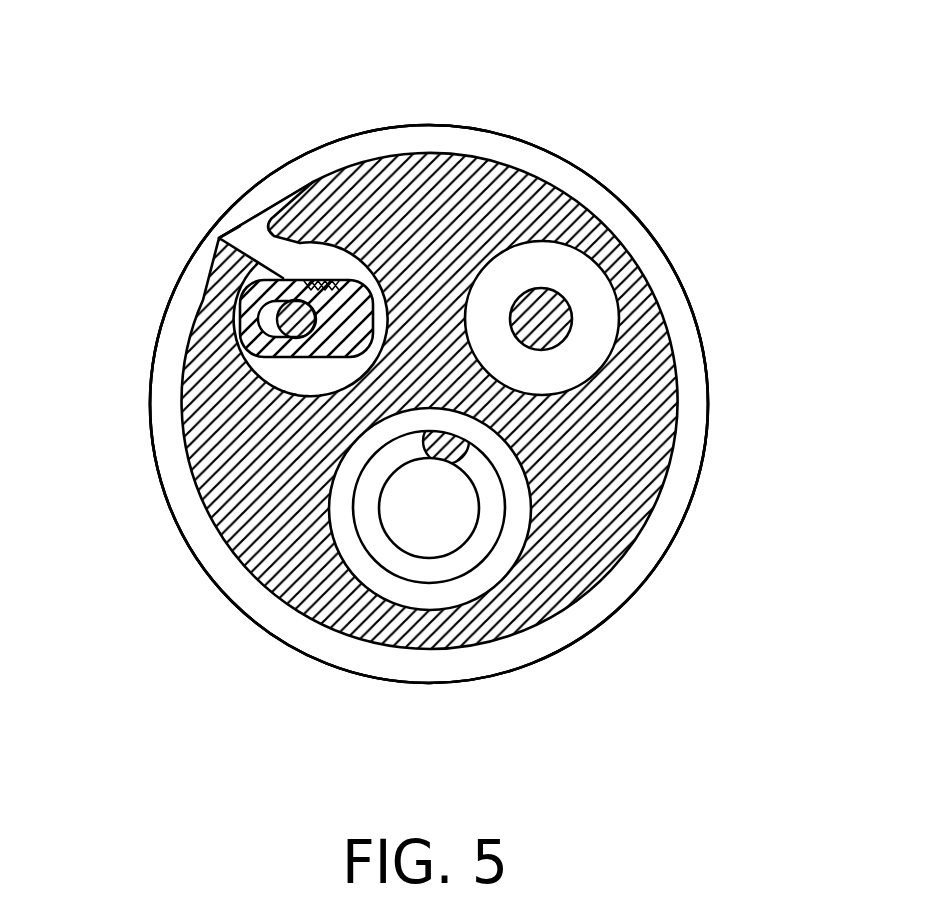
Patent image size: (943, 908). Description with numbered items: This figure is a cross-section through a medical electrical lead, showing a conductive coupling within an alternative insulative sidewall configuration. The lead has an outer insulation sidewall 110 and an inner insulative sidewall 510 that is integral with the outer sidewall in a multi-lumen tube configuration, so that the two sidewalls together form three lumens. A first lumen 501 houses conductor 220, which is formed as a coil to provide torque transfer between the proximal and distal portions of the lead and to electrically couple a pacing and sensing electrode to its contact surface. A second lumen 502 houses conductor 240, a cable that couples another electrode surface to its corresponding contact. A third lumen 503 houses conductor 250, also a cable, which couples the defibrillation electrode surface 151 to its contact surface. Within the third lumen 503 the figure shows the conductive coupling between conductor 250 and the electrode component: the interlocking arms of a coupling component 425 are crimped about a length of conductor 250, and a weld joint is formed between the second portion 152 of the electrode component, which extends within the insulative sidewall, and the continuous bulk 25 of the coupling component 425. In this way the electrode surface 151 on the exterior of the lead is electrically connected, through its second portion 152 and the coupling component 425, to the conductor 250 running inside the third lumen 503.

The continuous bulk 25 is at (426, 320).
The outer insulation sidewall 110 is at (643, 345).
The electrode surface 151 is at (350, 155).
The second portion of electrode component 152 is at (305, 262).
The conductor 250 is at (210, 238).
The coupling component 425 is at (302, 380).
The third lumen 503 is at (243, 295).
The second lumen 502 is at (583, 280).
The conductor 240 is at (532, 302).
The first lumen 501 is at (373, 573).
The conductor 220 is at (370, 513).
The inner insulative sidewall 510 is at (418, 248).